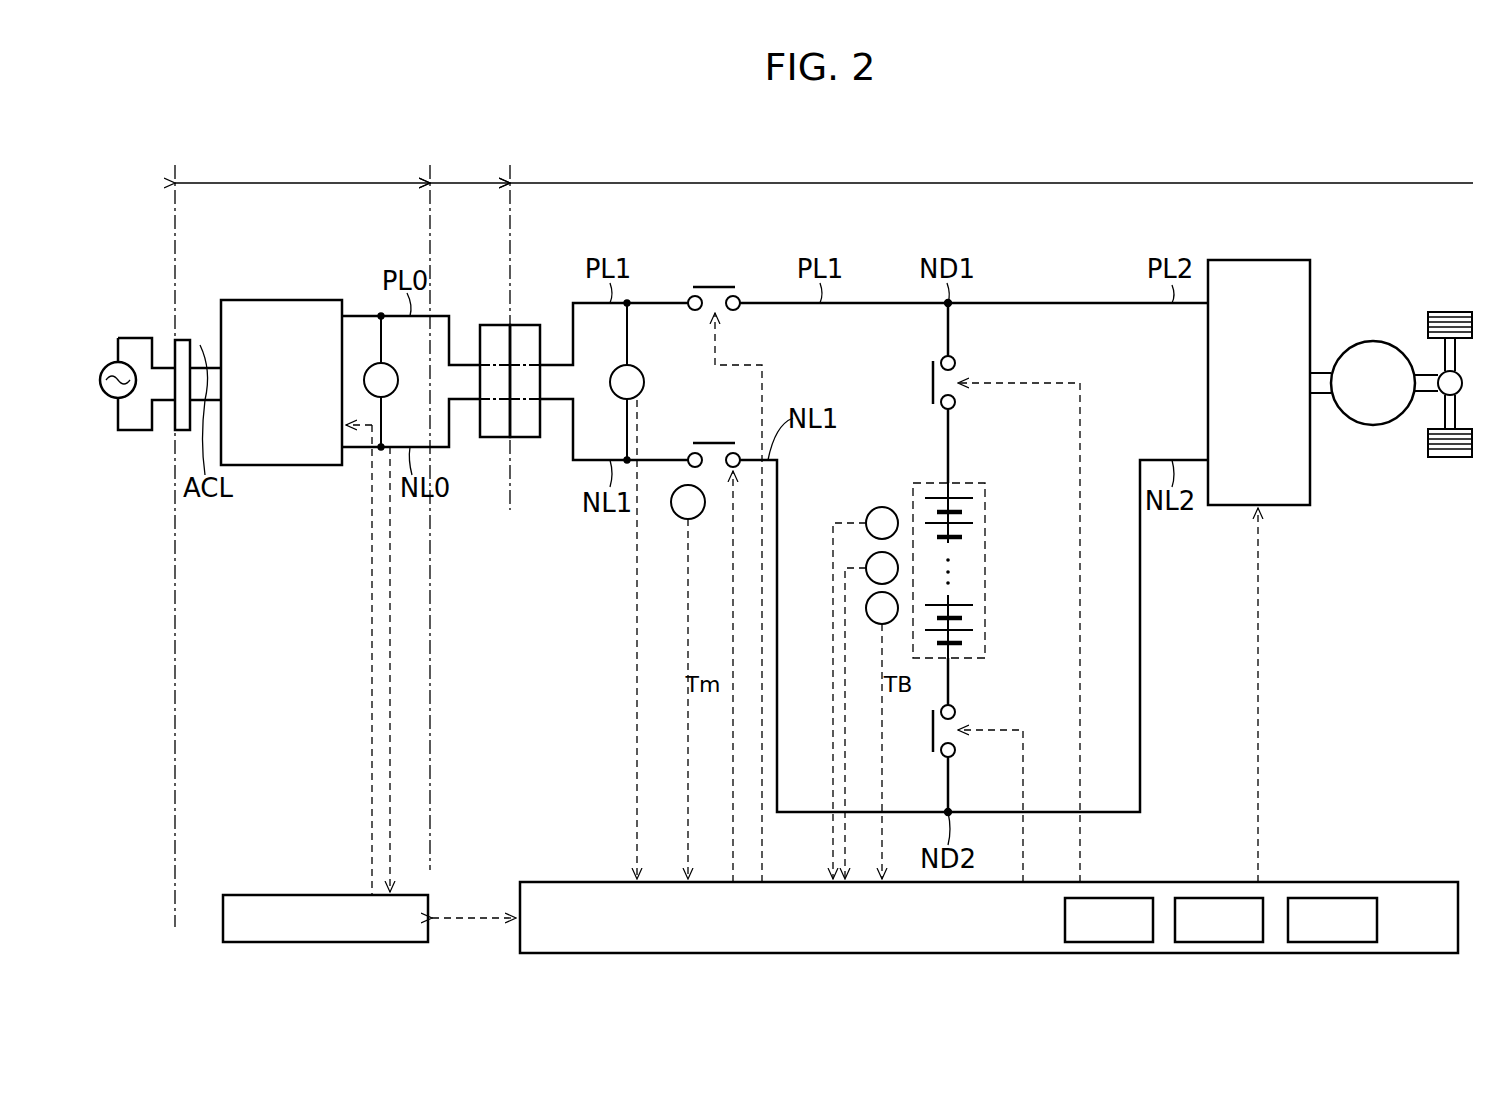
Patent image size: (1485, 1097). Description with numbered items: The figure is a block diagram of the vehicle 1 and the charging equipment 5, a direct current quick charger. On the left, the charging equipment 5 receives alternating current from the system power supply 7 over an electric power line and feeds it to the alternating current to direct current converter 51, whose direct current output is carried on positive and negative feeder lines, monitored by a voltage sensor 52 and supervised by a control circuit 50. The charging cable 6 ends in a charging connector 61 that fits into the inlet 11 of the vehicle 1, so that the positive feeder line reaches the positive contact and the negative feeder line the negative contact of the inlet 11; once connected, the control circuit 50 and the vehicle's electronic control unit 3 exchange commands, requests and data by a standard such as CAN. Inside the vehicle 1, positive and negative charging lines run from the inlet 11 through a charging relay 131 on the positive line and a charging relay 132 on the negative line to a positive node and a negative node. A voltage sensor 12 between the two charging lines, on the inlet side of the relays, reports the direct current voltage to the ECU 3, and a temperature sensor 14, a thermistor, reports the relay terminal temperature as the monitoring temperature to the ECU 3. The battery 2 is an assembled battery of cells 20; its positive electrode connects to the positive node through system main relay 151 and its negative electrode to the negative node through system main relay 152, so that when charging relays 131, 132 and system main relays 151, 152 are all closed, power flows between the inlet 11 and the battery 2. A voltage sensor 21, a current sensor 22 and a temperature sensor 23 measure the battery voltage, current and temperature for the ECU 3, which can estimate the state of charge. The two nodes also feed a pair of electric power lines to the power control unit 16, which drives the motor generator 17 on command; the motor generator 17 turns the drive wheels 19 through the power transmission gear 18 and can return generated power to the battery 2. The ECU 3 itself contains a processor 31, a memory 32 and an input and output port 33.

The vehicle 1 is at (991, 167).
The battery 2 is at (963, 545).
The electronic control unit 3 is at (989, 893).
The charging equipment 5 is at (302, 167).
The charging cable 6 is at (470, 167).
The system power supply 7 is at (112, 398).
The inlet 11 is at (530, 325).
The voltage sensor 12 is at (613, 372).
The temperature sensor 14 is at (691, 519).
The power control unit 16 is at (1260, 260).
The motor generator 17 is at (1373, 341).
The power transmission gear 18 is at (1440, 395).
The drive wheels 19 is at (1450, 312).
The cells 20 is at (960, 498).
The voltage sensor 21 is at (882, 507).
The current sensor 22 is at (866, 568).
The temperature sensor 23 is at (868, 610).
The processor 31 is at (1108, 898).
The memory 32 is at (1217, 898).
The input and output port 33 is at (1330, 898).
The control circuit 50 is at (258, 895).
The alternating current to direct current converter 51 is at (265, 300).
The voltage sensor 52 is at (372, 368).
The charging connector 61 is at (488, 325).
The charging relay 131 is at (713, 287).
The charging relay 132 is at (713, 443).
The system main relay 151 is at (930, 380).
The system main relay 152 is at (956, 746).